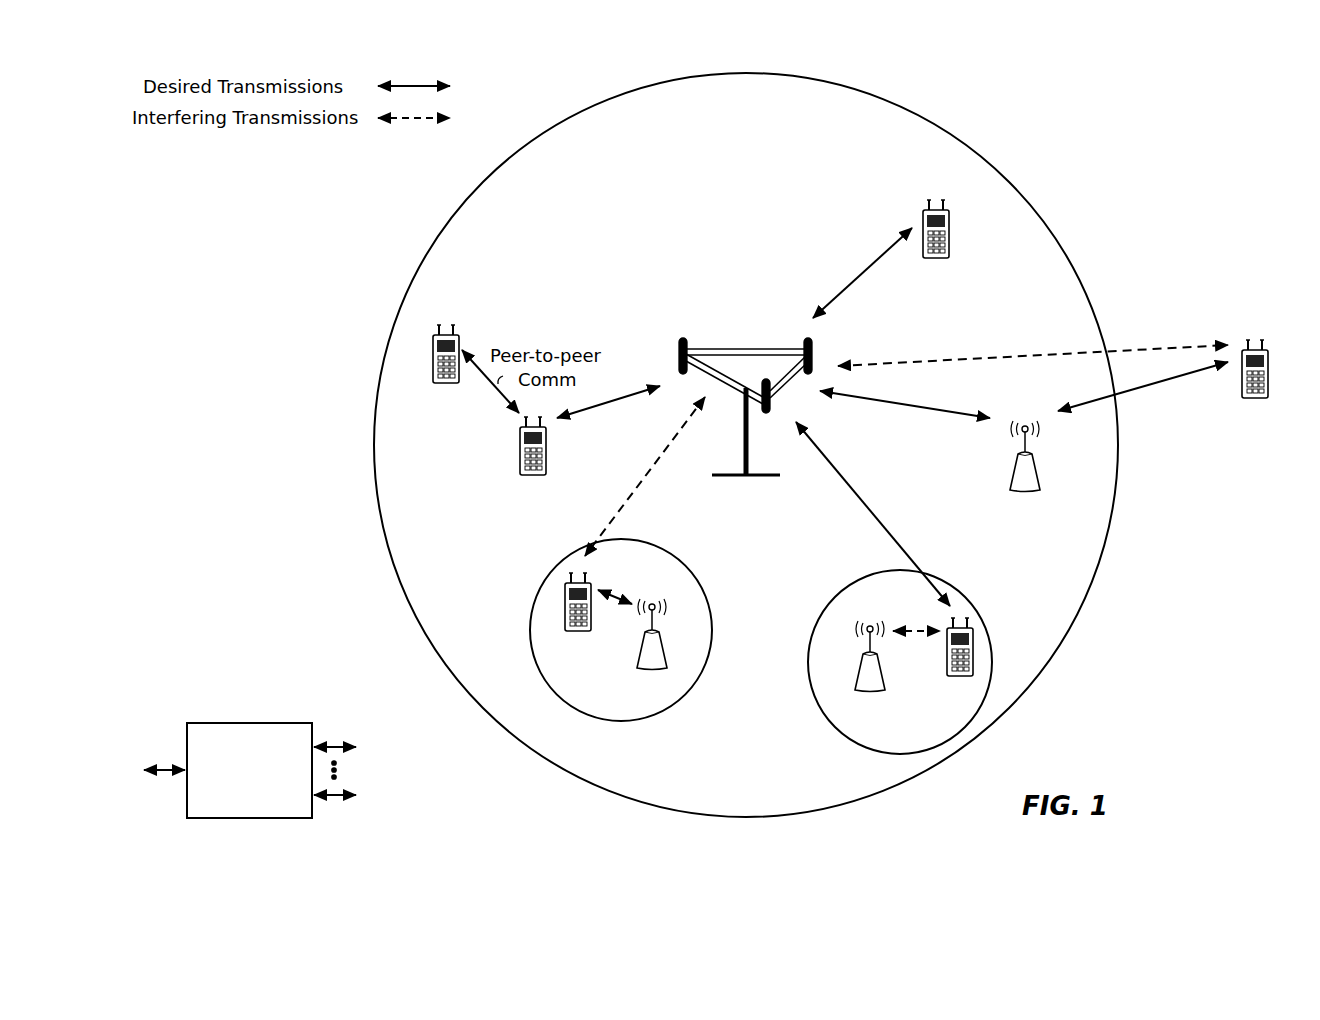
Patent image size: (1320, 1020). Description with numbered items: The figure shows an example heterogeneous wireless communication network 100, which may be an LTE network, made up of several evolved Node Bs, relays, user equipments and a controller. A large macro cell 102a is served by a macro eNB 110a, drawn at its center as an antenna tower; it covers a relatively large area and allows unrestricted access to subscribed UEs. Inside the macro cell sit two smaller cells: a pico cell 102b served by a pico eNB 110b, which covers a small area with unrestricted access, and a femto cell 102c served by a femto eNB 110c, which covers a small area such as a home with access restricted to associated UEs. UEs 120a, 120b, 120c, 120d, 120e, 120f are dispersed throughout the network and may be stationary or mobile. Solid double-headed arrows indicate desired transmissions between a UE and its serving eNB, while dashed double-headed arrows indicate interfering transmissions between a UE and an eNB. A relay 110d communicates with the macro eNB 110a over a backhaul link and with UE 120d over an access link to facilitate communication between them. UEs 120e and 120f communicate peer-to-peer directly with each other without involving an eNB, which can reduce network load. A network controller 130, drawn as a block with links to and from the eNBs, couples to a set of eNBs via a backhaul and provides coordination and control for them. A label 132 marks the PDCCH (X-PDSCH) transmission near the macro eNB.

The wireless communication network 100 is at (1211, 113).
The macro cell 102a is at (746, 445).
The pico cell 102b is at (629, 626).
The femto cell 102c is at (897, 659).
The macro eNB 110a is at (745, 411).
The pico eNB 110b is at (657, 647).
The femto eNB 110c is at (860, 681).
The relay 110d is at (1028, 453).
The UE 120a is at (959, 240).
The UE 120b is at (565, 613).
The UE 120c is at (946, 657).
The UE 120d is at (1277, 377).
The UE 120e is at (513, 460).
The UE 120f is at (428, 363).
The network controller 130 is at (290, 755).
The PDCCH (X-PDSCH) 132 is at (913, 455).